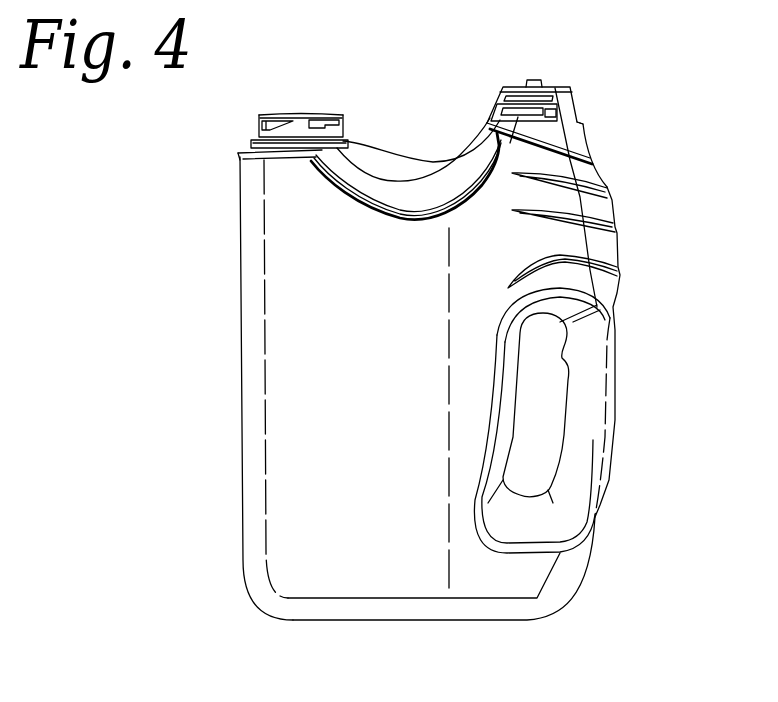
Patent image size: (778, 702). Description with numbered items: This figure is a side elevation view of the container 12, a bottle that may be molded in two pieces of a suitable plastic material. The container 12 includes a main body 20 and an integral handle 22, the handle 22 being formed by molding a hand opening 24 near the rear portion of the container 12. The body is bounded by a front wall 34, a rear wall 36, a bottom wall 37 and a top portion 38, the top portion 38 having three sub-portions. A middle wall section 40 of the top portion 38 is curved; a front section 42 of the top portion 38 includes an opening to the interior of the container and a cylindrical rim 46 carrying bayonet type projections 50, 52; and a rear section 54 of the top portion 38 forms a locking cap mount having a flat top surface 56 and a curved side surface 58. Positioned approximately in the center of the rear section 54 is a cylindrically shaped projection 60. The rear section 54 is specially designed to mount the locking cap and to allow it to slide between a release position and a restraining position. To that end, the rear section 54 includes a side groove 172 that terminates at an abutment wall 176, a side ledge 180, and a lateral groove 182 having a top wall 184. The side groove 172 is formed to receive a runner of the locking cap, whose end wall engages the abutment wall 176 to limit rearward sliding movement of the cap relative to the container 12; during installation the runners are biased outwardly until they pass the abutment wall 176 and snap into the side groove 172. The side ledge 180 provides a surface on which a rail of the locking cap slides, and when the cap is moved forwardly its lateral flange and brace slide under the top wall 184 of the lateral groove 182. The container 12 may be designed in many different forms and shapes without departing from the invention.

The container 12 is at (457, 87).
The main body 20 is at (372, 373).
The handle 22 is at (567, 403).
The hand opening 24 is at (558, 390).
The front wall 34 is at (240, 358).
The rear wall 36 is at (608, 183).
The bottom wall 37 is at (452, 621).
The top portion 38 is at (378, 150).
The middle wall section 40 is at (437, 187).
The front section 42 is at (274, 114).
The cylindrical rim 46 is at (297, 113).
The bayonet type projection 50 is at (268, 128).
The bayonet type projection 52 is at (315, 118).
The rear section 54 is at (558, 85).
The flat top surface 56 is at (523, 82).
The curved side surface 58 is at (580, 102).
The cylindrically shaped projection 60 is at (538, 80).
The side groove 172 is at (518, 117).
The abutment wall 176 is at (552, 110).
The side ledge 180 is at (517, 93).
The lateral groove 182 is at (598, 152).
The top wall 184 is at (590, 142).